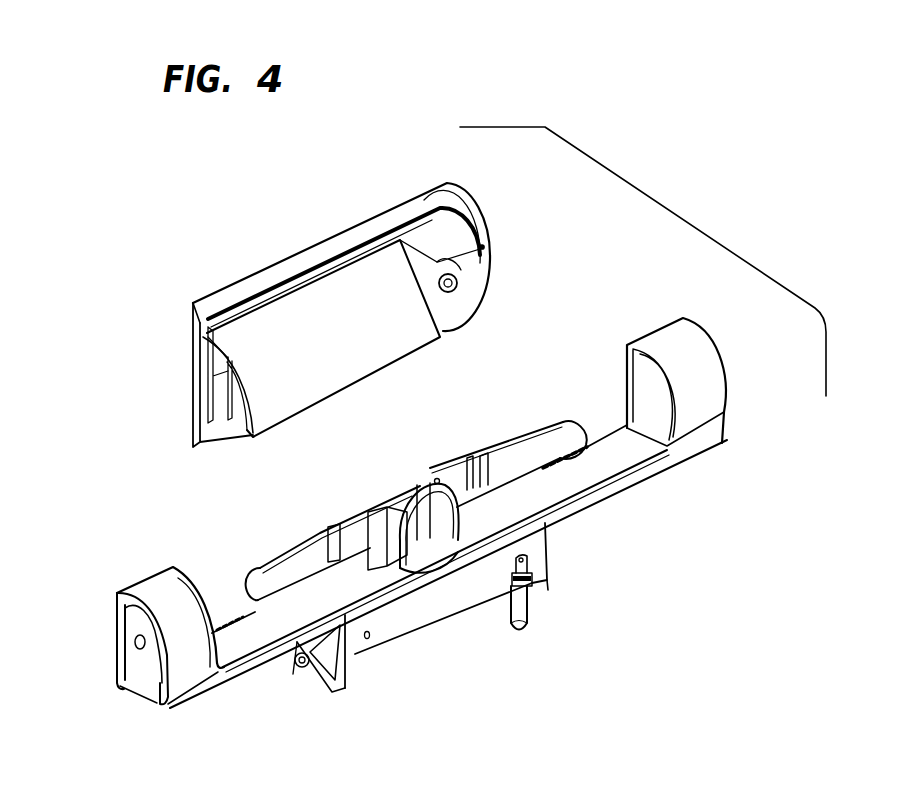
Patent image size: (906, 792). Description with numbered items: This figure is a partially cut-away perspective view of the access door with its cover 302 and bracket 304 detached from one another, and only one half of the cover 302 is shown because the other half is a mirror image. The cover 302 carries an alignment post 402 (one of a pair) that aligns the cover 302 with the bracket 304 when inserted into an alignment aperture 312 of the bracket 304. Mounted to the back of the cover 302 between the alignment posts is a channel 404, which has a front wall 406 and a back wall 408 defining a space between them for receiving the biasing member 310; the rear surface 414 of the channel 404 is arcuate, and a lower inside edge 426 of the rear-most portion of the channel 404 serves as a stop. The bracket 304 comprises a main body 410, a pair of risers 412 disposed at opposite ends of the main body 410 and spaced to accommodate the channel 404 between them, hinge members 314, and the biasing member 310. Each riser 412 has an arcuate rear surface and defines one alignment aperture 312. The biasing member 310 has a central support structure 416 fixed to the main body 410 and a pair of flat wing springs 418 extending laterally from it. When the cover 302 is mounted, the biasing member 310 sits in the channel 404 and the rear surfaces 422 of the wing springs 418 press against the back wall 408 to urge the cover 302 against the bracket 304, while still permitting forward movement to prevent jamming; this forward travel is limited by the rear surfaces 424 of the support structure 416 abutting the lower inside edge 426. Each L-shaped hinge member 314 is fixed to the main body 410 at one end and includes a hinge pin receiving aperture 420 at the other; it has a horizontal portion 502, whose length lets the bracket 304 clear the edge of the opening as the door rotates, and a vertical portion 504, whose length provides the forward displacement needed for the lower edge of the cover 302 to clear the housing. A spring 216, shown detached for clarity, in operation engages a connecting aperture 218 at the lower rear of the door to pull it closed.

The cover 302 is at (293, 250).
The rear surface of channel 414 is at (325, 365).
The alignment post 402 is at (460, 280).
The front wall 406 is at (192, 320).
The channel 404 is at (210, 363).
The back wall 408 is at (223, 396).
The lower inside edge 426 is at (243, 428).
The bracket 304 is at (618, 488).
The main body 410 is at (397, 593).
The biasing member 310 is at (432, 458).
The riser 412 is at (707, 367).
The alignment aperture 312 is at (125, 655).
The flat wing spring 418 is at (555, 425).
The rear surface of flat wing spring 422 is at (563, 437).
The central support structure 416 is at (407, 507).
The rear surface of support structure 424 is at (447, 563).
The connecting aperture 218 is at (547, 528).
The spring 216 is at (533, 605).
The hinge member 314 is at (548, 582).
The vertical portion 504 is at (350, 652).
The horizontal portion 502 is at (315, 675).
The hinge pin receiving aperture 420 is at (293, 674).